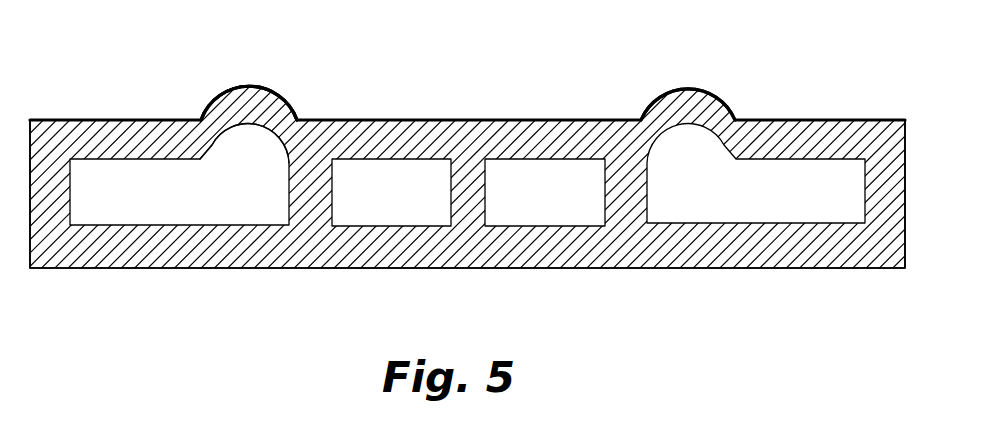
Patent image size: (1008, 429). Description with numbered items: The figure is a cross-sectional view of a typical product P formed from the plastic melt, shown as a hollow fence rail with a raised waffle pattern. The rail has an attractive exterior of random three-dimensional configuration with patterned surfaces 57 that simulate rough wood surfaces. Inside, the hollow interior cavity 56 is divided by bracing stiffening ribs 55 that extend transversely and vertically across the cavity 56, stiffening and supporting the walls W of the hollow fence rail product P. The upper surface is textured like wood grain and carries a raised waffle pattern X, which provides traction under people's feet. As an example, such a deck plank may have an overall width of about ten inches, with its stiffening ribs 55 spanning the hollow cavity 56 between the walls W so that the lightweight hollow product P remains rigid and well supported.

The product P is at (535, 58).
The stiffening ribs 55 is at (310, 147).
The hollow interior cavity 56 is at (158, 203).
The patterned surfaces 57 is at (446, 118).
The walls W is at (87, 132).
The raised waffle pattern X is at (243, 88).